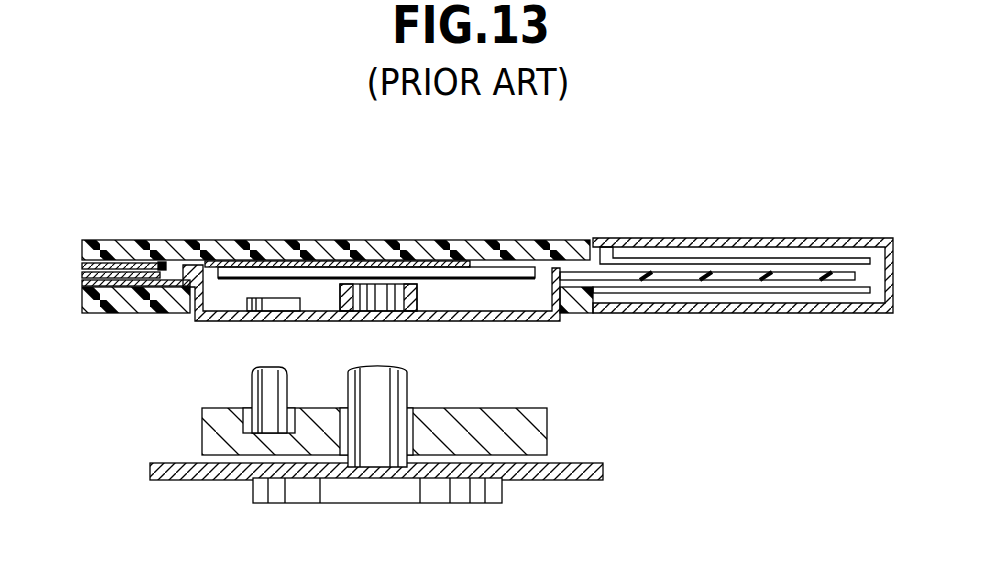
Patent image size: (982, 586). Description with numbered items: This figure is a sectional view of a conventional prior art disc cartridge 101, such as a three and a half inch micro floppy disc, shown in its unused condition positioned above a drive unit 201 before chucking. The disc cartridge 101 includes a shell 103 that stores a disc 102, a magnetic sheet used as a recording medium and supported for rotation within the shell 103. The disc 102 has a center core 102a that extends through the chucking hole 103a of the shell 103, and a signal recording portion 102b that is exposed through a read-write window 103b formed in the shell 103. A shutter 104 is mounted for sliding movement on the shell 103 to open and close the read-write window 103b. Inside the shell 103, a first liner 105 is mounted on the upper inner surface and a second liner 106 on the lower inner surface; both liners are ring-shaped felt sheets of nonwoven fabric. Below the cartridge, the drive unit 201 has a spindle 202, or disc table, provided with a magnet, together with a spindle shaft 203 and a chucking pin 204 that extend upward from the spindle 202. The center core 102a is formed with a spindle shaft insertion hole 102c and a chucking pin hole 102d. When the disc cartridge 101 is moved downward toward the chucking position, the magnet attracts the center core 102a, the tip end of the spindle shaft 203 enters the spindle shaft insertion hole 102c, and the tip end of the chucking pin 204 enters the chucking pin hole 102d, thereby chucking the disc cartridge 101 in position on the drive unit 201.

The disc cartridge 101 is at (157, 228).
The disc 102 is at (178, 237).
The center core 102a is at (233, 237).
The signal recording portion 102b is at (117, 237).
The spindle shaft insertion hole 102c is at (393, 284).
The chucking pin hole 102d is at (277, 300).
The shell 103 is at (563, 233).
The chucking hole 103a is at (195, 313).
The read-write window 103b is at (677, 257).
The shutter 104 is at (758, 230).
The first liner 105 is at (100, 262).
The second liner 106 is at (98, 313).
The drive unit 201 is at (200, 489).
The spindle 202 is at (212, 425).
The spindle shaft 203 is at (393, 388).
The chucking pin 204 is at (270, 380).